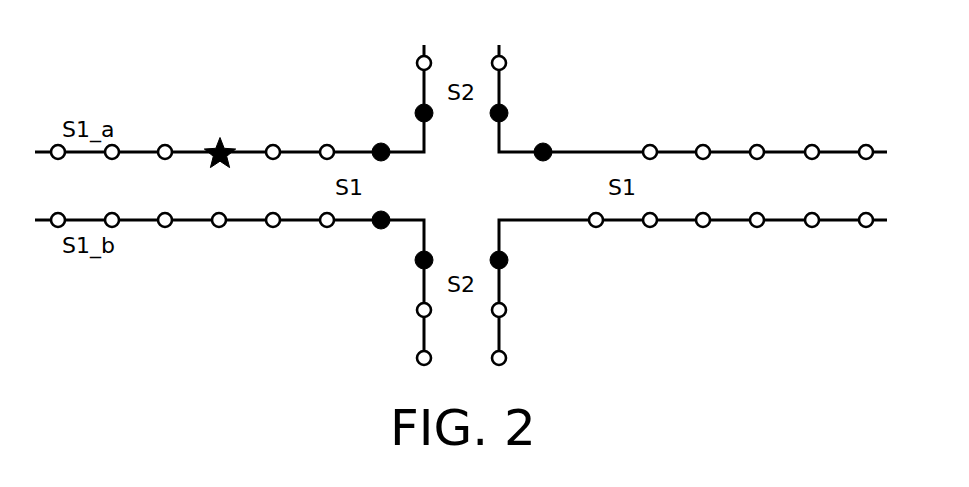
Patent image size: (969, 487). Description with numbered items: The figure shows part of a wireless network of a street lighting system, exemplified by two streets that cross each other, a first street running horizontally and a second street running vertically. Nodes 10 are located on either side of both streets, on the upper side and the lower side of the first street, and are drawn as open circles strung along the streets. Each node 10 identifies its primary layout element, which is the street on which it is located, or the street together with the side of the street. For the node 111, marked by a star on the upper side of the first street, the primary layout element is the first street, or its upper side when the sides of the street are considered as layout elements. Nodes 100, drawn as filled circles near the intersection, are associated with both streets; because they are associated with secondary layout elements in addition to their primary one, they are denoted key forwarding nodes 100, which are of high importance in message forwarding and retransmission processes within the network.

The node 10 is at (506, 64).
The key forwarding node 100 is at (544, 144).
The node 111 is at (223, 137).